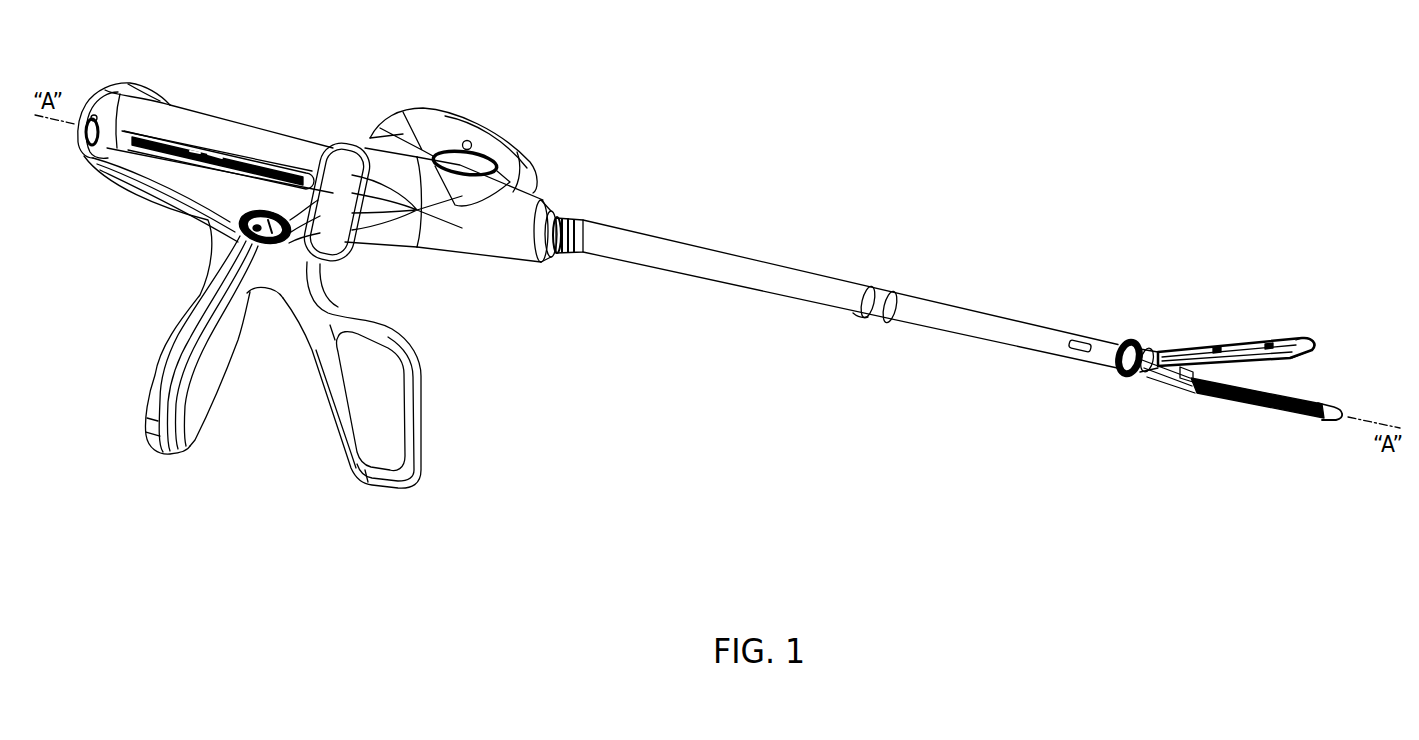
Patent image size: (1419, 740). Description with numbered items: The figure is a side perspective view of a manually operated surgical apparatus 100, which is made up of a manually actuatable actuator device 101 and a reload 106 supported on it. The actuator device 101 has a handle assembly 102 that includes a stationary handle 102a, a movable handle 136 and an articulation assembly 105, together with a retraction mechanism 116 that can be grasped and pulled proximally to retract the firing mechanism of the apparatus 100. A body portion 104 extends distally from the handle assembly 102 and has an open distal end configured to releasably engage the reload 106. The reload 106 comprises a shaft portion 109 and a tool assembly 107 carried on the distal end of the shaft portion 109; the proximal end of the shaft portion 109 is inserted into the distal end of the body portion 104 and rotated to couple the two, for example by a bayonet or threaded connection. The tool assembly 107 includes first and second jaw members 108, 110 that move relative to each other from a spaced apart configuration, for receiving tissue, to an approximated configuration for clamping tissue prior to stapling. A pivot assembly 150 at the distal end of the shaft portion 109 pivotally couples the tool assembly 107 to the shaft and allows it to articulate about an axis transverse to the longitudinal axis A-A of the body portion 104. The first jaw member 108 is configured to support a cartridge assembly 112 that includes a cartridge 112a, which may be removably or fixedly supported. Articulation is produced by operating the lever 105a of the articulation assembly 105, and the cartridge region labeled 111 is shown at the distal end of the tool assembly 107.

The surgical apparatus 100 is at (721, 288).
The actuator device 101 is at (346, 288).
The handle assembly 102 is at (230, 270).
The stationary handle 102a is at (290, 138).
The body portion 104 is at (852, 273).
The articulation assembly 105 is at (453, 148).
The lever 105a is at (463, 117).
The reload 106 is at (1261, 341).
The tool assembly 107 is at (1256, 426).
The first jaw member 108 is at (1170, 343).
The shaft portion 109 is at (1043, 322).
The second jaw member 110 is at (1256, 410).
The cartridge tip 111 is at (1355, 398).
The cartridge assembly 112 is at (1280, 291).
The cartridge 112a is at (1287, 360).
The retraction mechanism 116 is at (160, 92).
The movable handle 136 is at (382, 481).
The pivot assembly 150 is at (1133, 320).